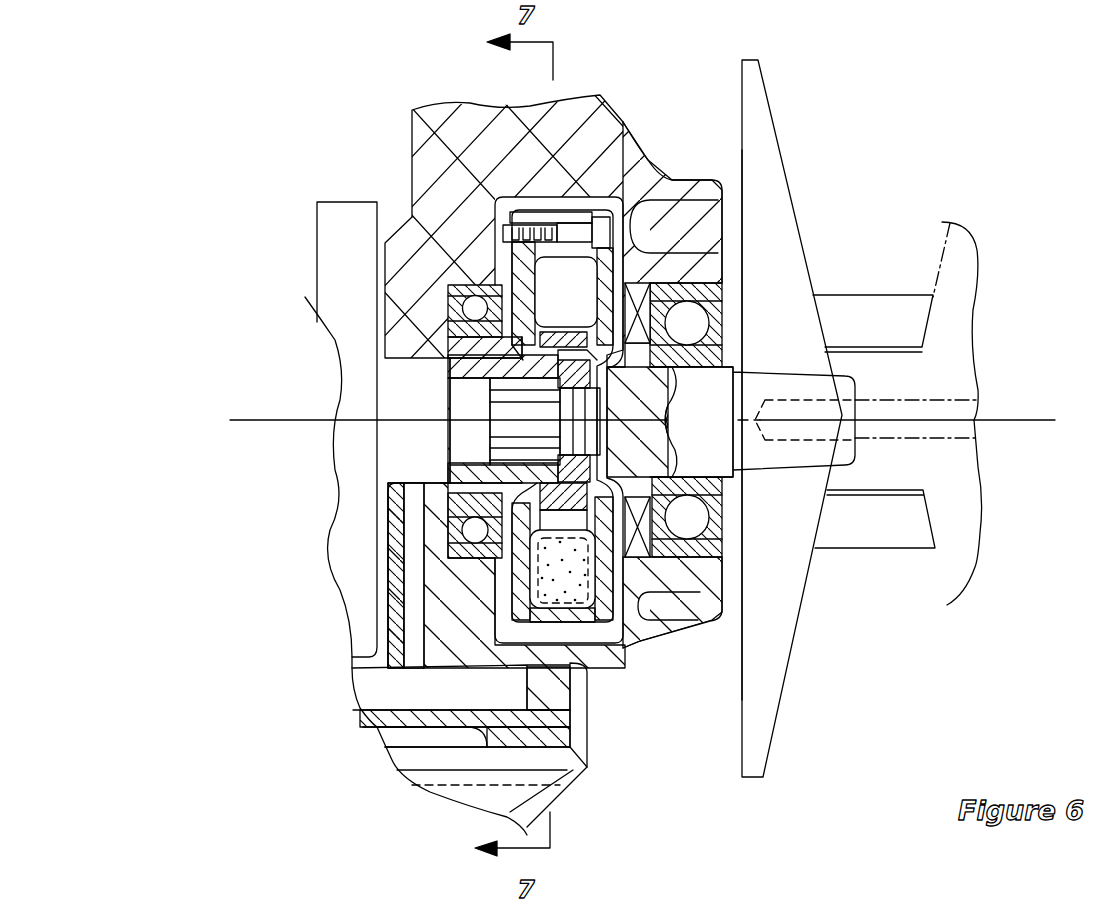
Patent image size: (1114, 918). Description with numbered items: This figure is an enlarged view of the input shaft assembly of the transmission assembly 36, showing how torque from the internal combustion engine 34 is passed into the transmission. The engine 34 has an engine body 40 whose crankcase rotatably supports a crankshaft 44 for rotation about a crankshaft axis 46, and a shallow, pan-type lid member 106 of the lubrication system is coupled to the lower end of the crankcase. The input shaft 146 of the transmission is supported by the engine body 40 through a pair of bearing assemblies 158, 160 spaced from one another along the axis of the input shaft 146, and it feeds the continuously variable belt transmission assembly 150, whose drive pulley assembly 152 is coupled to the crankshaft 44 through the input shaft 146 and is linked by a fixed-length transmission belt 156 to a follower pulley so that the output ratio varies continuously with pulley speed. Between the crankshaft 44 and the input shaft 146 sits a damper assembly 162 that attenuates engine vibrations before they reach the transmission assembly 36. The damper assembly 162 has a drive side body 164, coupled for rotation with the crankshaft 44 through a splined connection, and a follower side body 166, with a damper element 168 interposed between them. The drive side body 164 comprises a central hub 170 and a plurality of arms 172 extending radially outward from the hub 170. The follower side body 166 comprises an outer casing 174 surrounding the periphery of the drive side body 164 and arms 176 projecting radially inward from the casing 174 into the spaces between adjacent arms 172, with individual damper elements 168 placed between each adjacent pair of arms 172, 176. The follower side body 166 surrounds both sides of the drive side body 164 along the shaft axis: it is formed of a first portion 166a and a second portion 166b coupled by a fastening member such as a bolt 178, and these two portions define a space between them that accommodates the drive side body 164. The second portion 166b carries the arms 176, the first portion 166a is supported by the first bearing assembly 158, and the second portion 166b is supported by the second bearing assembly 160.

The internal combustion engine 34 is at (288, 122).
The transmission assembly 36 is at (913, 377).
The engine body 40 is at (292, 190).
The crankshaft 44 is at (343, 263).
The crankshaft axis 46 is at (1056, 412).
The lid member 106 is at (588, 765).
The input shaft 146 is at (808, 450).
The continuously variable belt transmission assembly 150 is at (780, 761).
The drive pulley assembly 152 is at (782, 712).
The transmission belt 156 is at (917, 549).
The first bearing assembly 158 is at (473, 305).
The second bearing assembly 160 is at (694, 320).
The damper assembly 162 is at (625, 620).
The drive side body 164 is at (386, 466).
The follower side body 166 is at (583, 190).
The first portion 166a is at (515, 210).
The second portion 166b is at (557, 210).
The damper element 168 is at (563, 585).
The hub 170 is at (470, 472).
The arms 172 is at (540, 582).
The casing 174 is at (627, 197).
The arms 176 is at (647, 243).
The bolt 178 is at (412, 108).